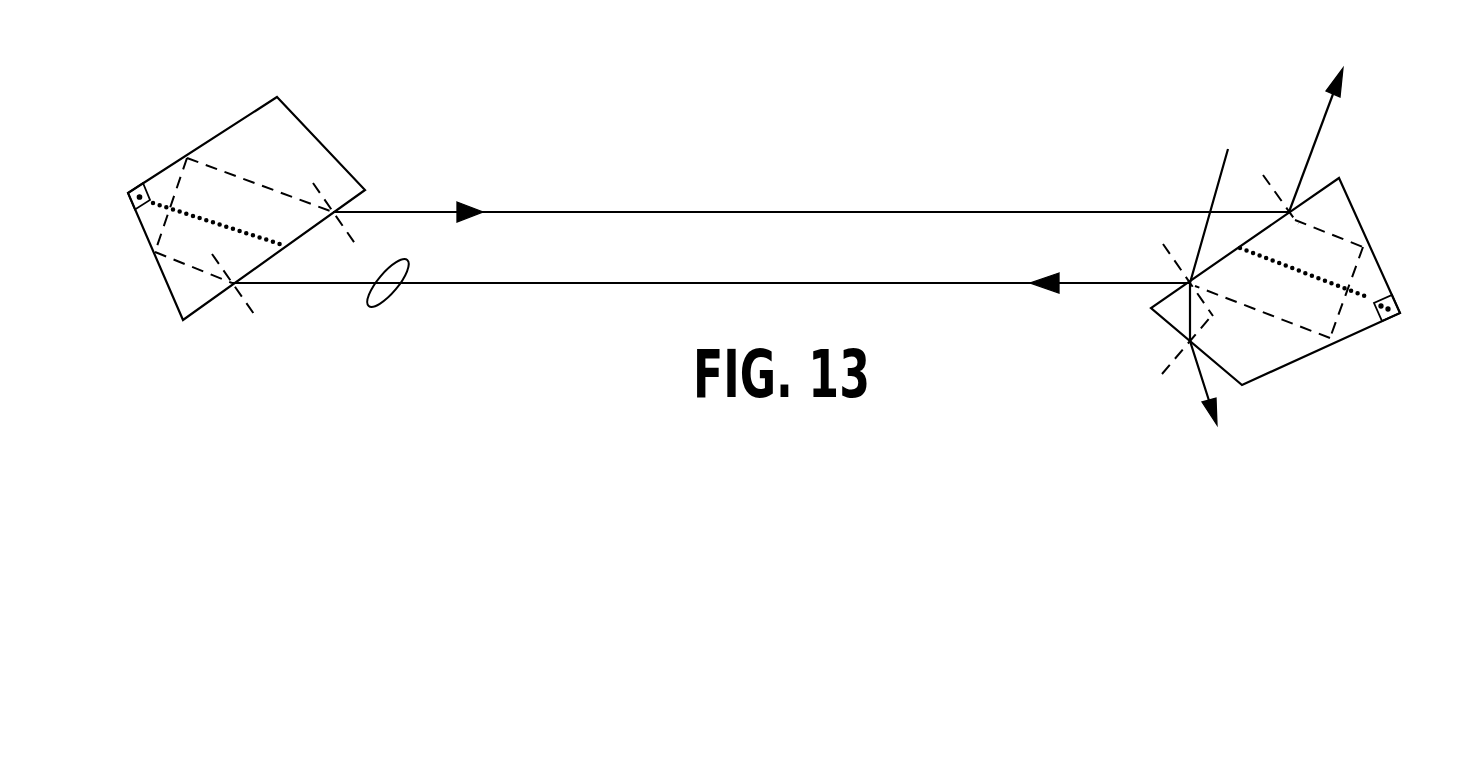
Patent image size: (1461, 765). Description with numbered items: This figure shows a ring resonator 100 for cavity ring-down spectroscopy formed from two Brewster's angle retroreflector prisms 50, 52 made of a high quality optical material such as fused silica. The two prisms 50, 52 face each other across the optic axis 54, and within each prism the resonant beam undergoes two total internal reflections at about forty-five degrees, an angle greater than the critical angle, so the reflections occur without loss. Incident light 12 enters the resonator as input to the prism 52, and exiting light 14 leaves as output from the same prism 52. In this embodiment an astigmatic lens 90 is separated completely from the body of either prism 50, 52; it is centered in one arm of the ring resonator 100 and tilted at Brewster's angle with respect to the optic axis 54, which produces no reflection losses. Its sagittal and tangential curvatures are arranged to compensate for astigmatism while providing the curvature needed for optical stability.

The resonator 100 is at (956, 100).
The Brewster's angle retroreflector prism 50 is at (320, 145).
The Brewster's angle retroreflector prism 52 is at (1352, 202).
The optic axis 54 is at (708, 212).
The astigmatic lens 90 is at (383, 287).
The incident light 12 is at (1222, 165).
The exiting light 14 is at (1326, 101).